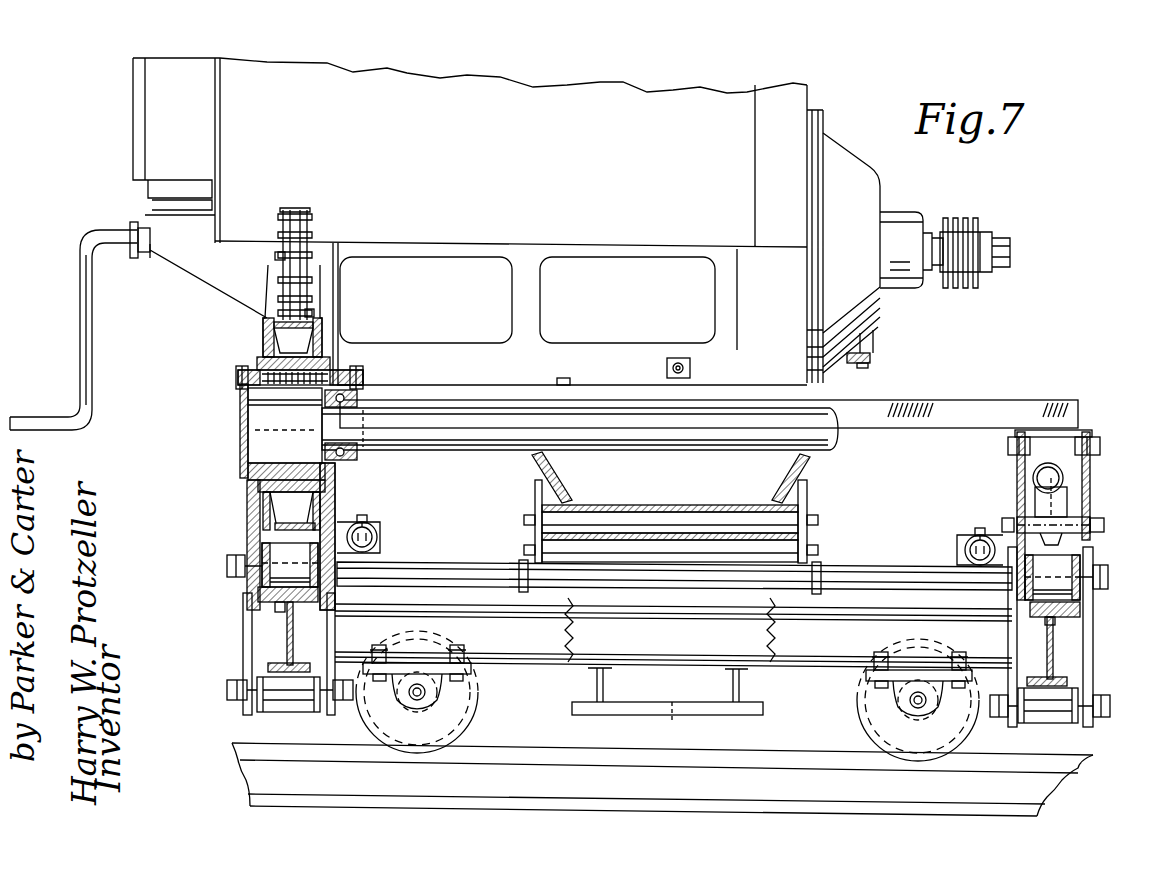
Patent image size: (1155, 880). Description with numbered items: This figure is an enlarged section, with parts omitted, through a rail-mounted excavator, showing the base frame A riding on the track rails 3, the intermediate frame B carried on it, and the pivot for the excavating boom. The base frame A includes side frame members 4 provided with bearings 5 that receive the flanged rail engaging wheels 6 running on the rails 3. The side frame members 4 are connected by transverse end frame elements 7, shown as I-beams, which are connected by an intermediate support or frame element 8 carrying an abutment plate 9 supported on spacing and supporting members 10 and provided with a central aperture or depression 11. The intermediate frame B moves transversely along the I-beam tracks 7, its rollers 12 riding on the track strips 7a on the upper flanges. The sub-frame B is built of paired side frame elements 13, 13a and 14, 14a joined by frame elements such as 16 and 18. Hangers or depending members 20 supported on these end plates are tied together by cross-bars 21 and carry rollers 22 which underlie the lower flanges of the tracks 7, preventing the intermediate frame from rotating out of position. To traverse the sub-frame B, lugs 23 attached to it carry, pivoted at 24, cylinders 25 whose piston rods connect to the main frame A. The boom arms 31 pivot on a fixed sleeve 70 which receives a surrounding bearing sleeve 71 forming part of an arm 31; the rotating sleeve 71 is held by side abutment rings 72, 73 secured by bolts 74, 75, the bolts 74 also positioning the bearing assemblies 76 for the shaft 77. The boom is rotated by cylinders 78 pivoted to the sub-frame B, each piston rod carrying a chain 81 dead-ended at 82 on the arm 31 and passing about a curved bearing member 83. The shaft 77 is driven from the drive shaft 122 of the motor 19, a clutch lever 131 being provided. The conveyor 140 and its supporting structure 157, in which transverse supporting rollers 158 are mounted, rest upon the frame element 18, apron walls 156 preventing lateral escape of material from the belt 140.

The track rails 3 is at (240, 752).
The side frame members 4 is at (530, 652).
The bearings 5 is at (440, 697).
The flanged rail engaging wheels 6 is at (465, 720).
The transverse or end frame elements 7 is at (287, 630).
The track strips 7a is at (290, 585).
The intermediate support or frame element 8 is at (628, 632).
The abutment plate 9 is at (622, 710).
The spacing and supporting members 10 is at (608, 683).
The central aperture or depression 11 is at (665, 721).
The rollers 12 is at (270, 560).
The side frame element 13 is at (247, 528).
The side frame element 13a is at (338, 490).
The side frame element 14 is at (1090, 497).
The side frame element 14a is at (1017, 487).
The transversely extending frame element 16 is at (980, 400).
The transversely extending frame element 18 is at (443, 562).
The motor 19 is at (690, 100).
The hangers or depending members 20 is at (245, 606).
The cross-bars 21 is at (245, 705).
The rollers 22 is at (290, 707).
The lugs 23 is at (377, 530).
The pivot 24 is at (362, 516).
The cylinders 25 is at (378, 540).
The arms 31 is at (262, 335).
The fixed sleeve 70 is at (276, 463).
The bearing sleeve 71 is at (266, 505).
The side abutment ring 72 is at (339, 370).
The side abutment ring 73 is at (260, 362).
The bolts 74 is at (357, 380).
The bolts 75 is at (238, 377).
The bearing assemblies 76 is at (352, 455).
The shaft 77 is at (478, 445).
The cylinders 78 is at (1034, 476).
The chain 81 is at (316, 210).
The dead end 82 is at (315, 312).
The curved bearing member 83 is at (283, 255).
The drive shaft 122 is at (996, 244).
The clutch lever 131 is at (872, 362).
The conveyor 140 is at (673, 505).
The apron walls 156 is at (562, 478).
The supporting structure 157 is at (535, 500).
The transverse supporting rollers 158 is at (810, 542).
The base frame A is at (797, 677).
The intermediate frame B is at (1103, 475).